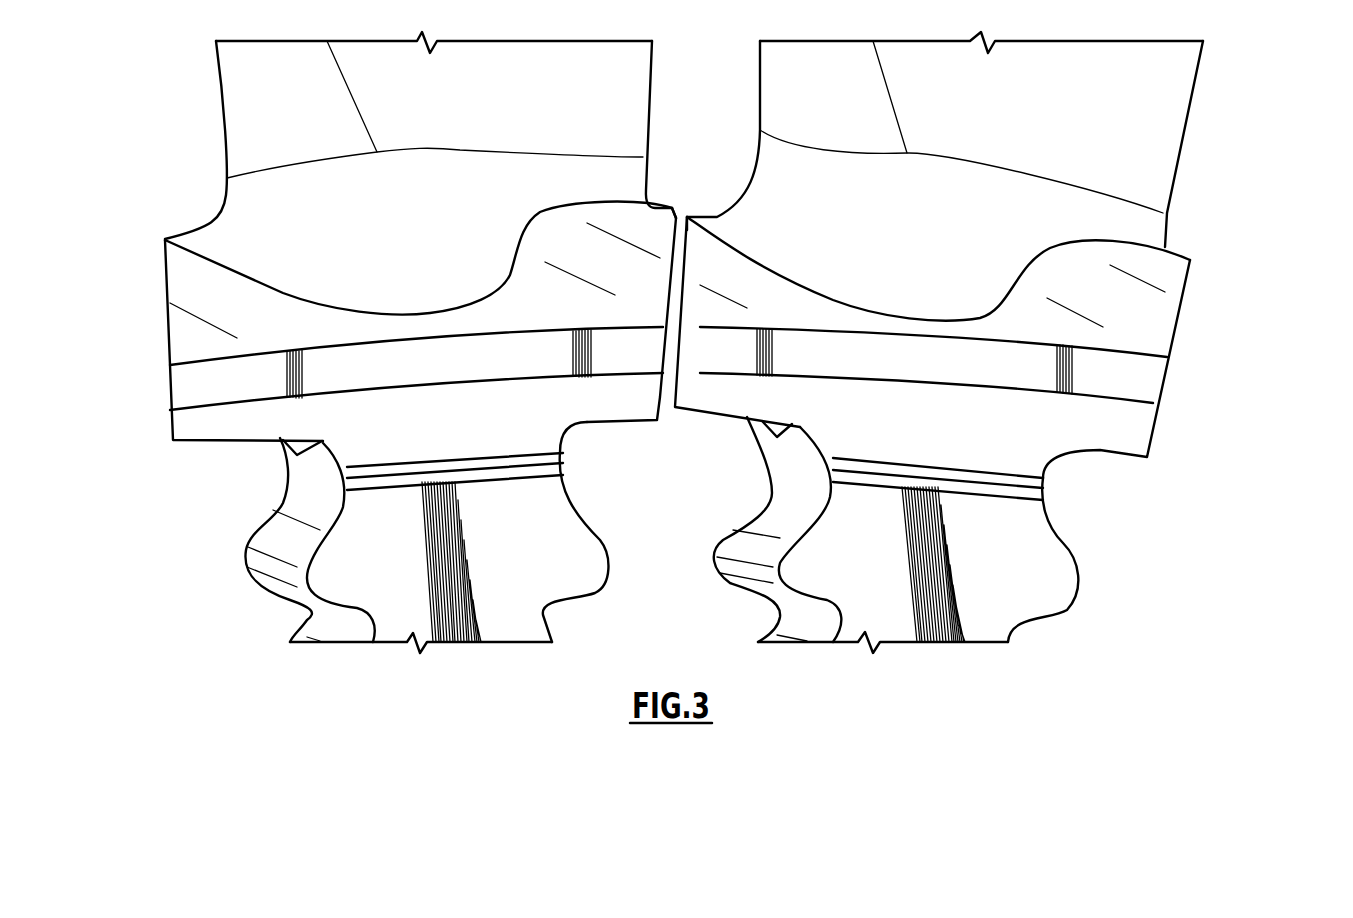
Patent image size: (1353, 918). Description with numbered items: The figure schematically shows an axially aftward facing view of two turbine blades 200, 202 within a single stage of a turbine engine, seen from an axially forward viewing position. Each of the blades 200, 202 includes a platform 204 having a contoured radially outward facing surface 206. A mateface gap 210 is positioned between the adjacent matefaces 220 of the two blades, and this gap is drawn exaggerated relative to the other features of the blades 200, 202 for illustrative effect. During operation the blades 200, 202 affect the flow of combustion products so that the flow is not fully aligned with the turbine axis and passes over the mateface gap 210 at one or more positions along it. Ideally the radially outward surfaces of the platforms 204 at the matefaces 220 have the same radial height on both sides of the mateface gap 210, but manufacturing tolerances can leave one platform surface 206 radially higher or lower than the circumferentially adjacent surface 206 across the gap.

The turbine blade 200 is at (1258, 132).
The turbine blade 202 is at (179, 134).
The platform 204 is at (200, 342).
The contoured radially outward facing surface 206 is at (285, 292).
The mateface gap 210 is at (665, 397).
The mateface 220 is at (680, 217).